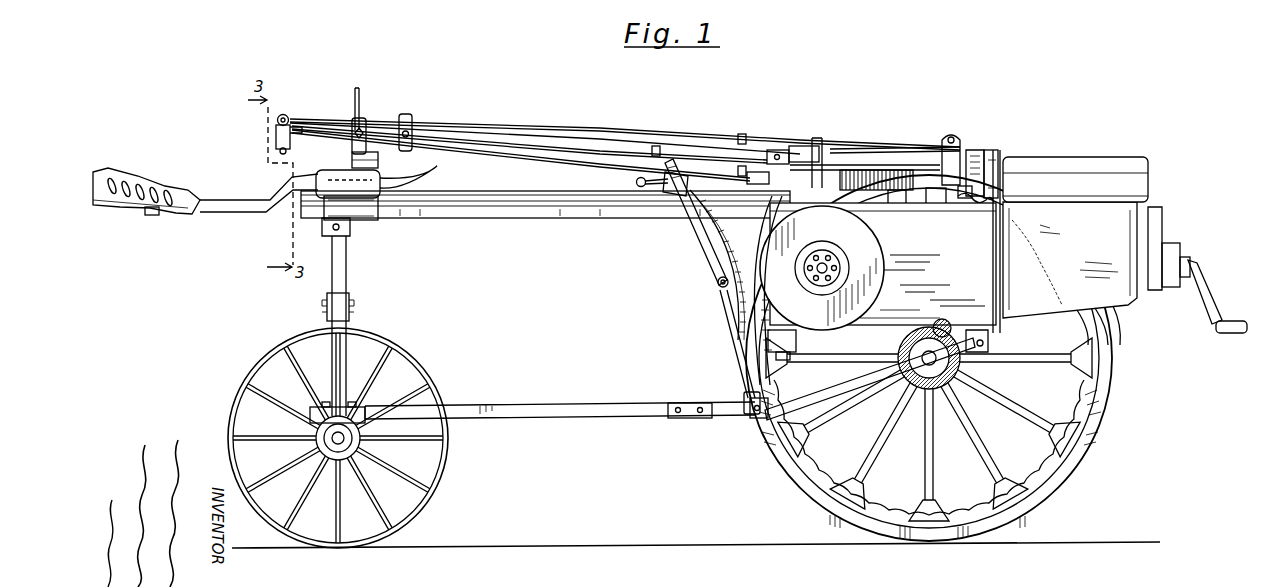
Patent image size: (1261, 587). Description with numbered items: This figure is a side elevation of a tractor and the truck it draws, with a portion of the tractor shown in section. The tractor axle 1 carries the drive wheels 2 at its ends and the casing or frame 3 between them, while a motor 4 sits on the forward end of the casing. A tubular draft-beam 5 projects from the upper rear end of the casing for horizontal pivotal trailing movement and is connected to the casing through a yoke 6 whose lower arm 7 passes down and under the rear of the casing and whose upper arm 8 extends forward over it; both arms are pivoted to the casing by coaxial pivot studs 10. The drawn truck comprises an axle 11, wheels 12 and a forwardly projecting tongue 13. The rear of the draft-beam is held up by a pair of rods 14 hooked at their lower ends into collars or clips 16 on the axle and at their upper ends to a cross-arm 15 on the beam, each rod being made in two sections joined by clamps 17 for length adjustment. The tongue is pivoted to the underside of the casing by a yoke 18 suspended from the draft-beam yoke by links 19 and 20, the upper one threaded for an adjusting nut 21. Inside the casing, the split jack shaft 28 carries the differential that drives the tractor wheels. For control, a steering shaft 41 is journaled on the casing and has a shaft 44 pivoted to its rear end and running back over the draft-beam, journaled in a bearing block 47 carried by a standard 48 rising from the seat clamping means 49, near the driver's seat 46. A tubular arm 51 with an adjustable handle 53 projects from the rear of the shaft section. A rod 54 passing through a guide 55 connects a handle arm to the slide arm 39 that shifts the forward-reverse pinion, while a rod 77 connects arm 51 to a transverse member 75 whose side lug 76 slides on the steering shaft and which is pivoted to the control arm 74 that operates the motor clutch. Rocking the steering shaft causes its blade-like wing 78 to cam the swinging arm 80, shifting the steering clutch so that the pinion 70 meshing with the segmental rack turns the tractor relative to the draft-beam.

The tractor axle 1 is at (948, 326).
The drive wheels 2 is at (790, 472).
The casing or frame 3 is at (885, 241).
The motor 4 is at (1096, 251).
The draft-beam 5 is at (543, 207).
The yoke 6 is at (700, 232).
The lower arm 7 is at (745, 302).
The upper arm 8 is at (816, 188).
The pivot studs 10 is at (792, 349).
The axle 11 is at (337, 446).
The wheels 12 is at (447, 468).
The tongue 13 is at (553, 420).
The rods 14 is at (346, 272).
The cross-arm 15 is at (330, 222).
The collars or clips 16 is at (347, 406).
The clamps 17 is at (327, 309).
The yoke 18 is at (836, 392).
The link 19 is at (715, 262).
The link 20 is at (742, 338).
The adjusting nut 21 is at (664, 196).
The split jack shaft 28 is at (817, 268).
The arm 39 is at (936, 204).
The shaft 41 is at (925, 152).
The shaft 44 is at (523, 150).
The driver's seat 46 is at (150, 193).
The bearing block 47 is at (364, 128).
The standard 48 is at (355, 101).
The seat clamping means 49 is at (364, 192).
The arm 51 is at (290, 140).
The handle 53 is at (286, 115).
The rod or member 54 is at (584, 152).
The guide 55 is at (410, 133).
The pinion 70 is at (900, 204).
The control arm 74 is at (972, 158).
The member 75 is at (895, 147).
The side lug or extension 76 is at (830, 152).
The rod or member 77 is at (640, 134).
The blade-like arm or wing 78 is at (999, 170).
The swinging arm 80 is at (970, 204).